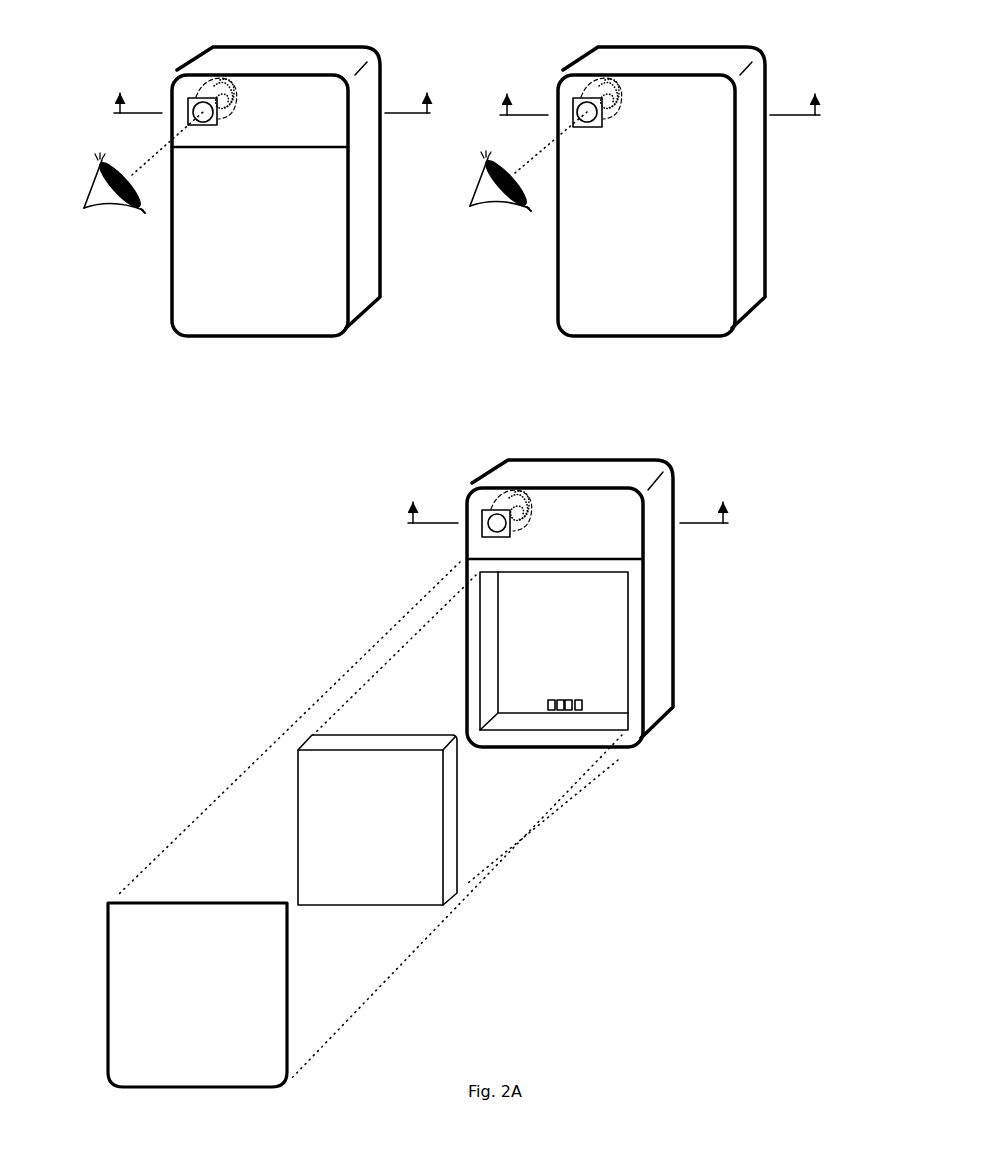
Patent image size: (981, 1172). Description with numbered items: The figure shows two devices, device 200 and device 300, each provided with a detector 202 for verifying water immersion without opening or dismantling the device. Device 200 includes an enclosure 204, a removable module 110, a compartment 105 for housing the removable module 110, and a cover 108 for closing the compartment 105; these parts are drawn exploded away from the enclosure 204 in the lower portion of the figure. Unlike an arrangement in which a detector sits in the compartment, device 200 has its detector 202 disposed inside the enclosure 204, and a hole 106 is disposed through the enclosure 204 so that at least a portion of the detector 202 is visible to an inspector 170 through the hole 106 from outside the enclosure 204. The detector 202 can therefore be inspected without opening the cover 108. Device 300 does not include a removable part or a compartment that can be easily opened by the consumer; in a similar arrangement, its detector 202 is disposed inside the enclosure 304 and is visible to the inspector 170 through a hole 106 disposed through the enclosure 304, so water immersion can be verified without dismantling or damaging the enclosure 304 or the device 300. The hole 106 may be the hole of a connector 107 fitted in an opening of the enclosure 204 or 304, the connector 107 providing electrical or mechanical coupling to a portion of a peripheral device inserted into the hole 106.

The compartment 105 is at (597, 653).
The hole 106 is at (200, 110).
The connector 107 is at (197, 93).
The cover 108 is at (188, 258).
The removable module 110 is at (312, 827).
The inspector 170 is at (103, 188).
The device 200 is at (160, 317).
The detector 202 is at (229, 88).
The enclosure 204 is at (362, 240).
The device 300 is at (545, 312).
The enclosure 304 is at (748, 238).